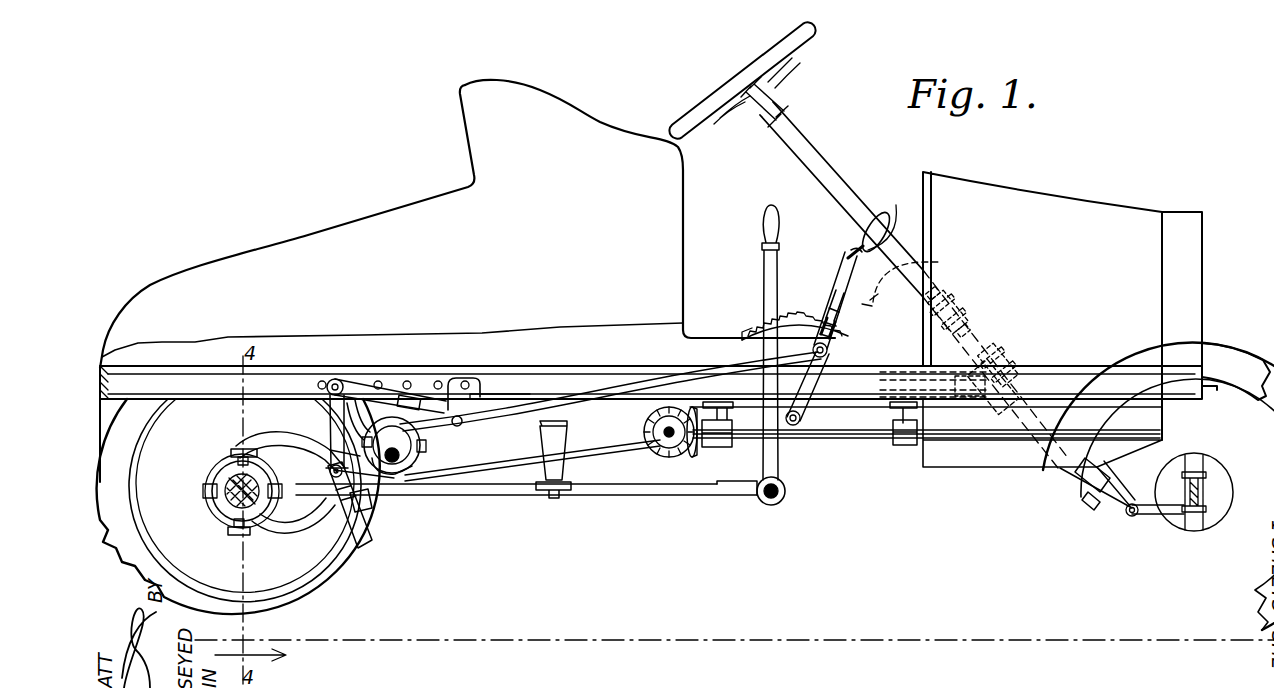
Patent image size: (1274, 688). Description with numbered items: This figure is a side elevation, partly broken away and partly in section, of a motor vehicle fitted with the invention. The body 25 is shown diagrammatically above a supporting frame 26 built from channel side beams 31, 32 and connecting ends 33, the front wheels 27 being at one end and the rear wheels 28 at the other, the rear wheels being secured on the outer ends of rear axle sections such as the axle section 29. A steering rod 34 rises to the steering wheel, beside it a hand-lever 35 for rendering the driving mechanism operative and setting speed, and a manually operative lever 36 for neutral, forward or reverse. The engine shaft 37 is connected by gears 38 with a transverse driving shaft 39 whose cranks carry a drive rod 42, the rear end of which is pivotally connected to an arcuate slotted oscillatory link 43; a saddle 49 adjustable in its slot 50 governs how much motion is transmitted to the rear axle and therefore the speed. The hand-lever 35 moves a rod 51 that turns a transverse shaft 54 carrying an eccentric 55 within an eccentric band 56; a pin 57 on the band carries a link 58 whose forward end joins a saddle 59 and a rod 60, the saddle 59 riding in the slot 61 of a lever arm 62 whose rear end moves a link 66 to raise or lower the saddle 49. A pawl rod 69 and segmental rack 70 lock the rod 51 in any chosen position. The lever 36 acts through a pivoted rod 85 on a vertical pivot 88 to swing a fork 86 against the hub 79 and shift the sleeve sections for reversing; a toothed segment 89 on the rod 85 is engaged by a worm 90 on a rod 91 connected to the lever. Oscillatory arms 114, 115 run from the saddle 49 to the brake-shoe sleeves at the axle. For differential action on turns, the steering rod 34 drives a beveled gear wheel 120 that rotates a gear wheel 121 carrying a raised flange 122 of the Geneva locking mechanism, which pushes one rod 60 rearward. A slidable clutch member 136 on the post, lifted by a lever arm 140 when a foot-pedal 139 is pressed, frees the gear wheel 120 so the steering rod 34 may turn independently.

The body 25 is at (467, 224).
The supporting frame 26 is at (1090, 375).
The front wheels 27 is at (1120, 573).
The rear wheels 28 is at (346, 599).
The rear axle section 29 is at (226, 504).
The channel side beam 31 is at (651, 386).
The channel side beam 32 is at (530, 342).
The connecting ends 33 is at (108, 383).
The steering rod 34 is at (808, 140).
The hand-lever 35 is at (846, 266).
The manually operative lever 36 is at (762, 252).
The engine shaft 37 is at (860, 440).
The gears 38 is at (696, 458).
The transverse driving shaft 39 is at (662, 448).
The drive rod 42 is at (530, 466).
The oscillatory link 43 is at (390, 500).
The saddle 49 is at (418, 488).
The slot 50 is at (350, 520).
The rod 51 is at (572, 396).
The transverse shaft 54 is at (422, 448).
The eccentric 55 is at (414, 470).
The eccentric band 56 is at (365, 410).
The pin 57 is at (465, 429).
The link 58 is at (466, 424).
The saddle 59 is at (470, 378).
The rod 60 is at (555, 380).
The slot 61 is at (416, 397).
The lever arm 62 is at (350, 370).
The link 66 is at (328, 422).
The pawl rod 69 is at (832, 300).
The segmental rack 70 is at (752, 326).
The hub 79 is at (225, 486).
The pivoted rod 85 is at (632, 498).
The fork 86 is at (230, 453).
The vertical pivot 88 is at (556, 500).
The toothed segment 89 is at (716, 499).
The worm 90 is at (786, 485).
The rod 91 is at (784, 497).
The oscillatory arm 114 is at (285, 458).
The oscillatory arm 115 is at (297, 532).
The beveled gear wheel 120 is at (1005, 380).
The gear wheel 121 is at (958, 395).
The raised flange 122 is at (912, 390).
The slidable clutch member 136 is at (962, 312).
The foot-pedal 139 is at (905, 268).
The lever arm 140 is at (918, 368).